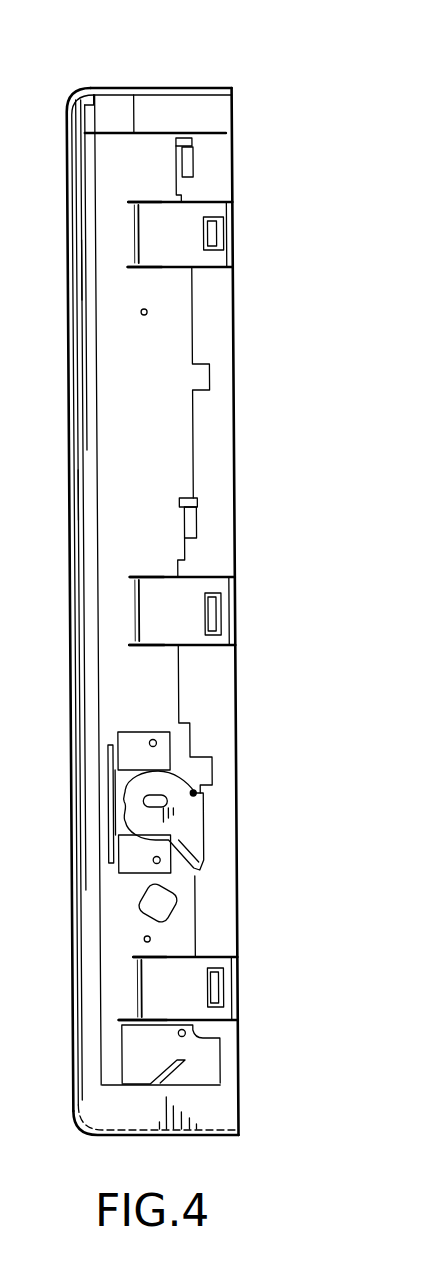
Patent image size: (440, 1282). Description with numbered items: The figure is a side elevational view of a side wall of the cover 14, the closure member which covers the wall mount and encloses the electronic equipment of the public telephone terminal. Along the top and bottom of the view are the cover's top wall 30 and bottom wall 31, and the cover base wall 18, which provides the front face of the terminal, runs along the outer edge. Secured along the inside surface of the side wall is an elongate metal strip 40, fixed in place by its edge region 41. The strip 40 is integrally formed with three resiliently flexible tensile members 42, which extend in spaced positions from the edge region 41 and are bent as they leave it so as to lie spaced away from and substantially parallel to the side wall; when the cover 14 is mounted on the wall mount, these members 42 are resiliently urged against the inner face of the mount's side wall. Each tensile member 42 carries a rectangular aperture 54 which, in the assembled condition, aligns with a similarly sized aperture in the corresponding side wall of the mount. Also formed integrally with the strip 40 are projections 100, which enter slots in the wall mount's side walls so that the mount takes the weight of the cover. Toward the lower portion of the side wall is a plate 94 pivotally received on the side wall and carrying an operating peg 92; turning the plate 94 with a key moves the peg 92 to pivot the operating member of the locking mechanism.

The cover 14 is at (70, 317).
The cover base wall 18 is at (70, 497).
The top wall 30 is at (167, 88).
The bottom wall 31 is at (120, 1140).
The elongate metal strip 40 is at (93, 272).
The edge region 41 is at (121, 222).
The resiliently flexible tensile member 42 is at (181, 222).
The rectangular aperture 54 is at (212, 233).
The operating peg 92 is at (197, 792).
The plate 94 is at (178, 825).
The projection 100 is at (197, 367).